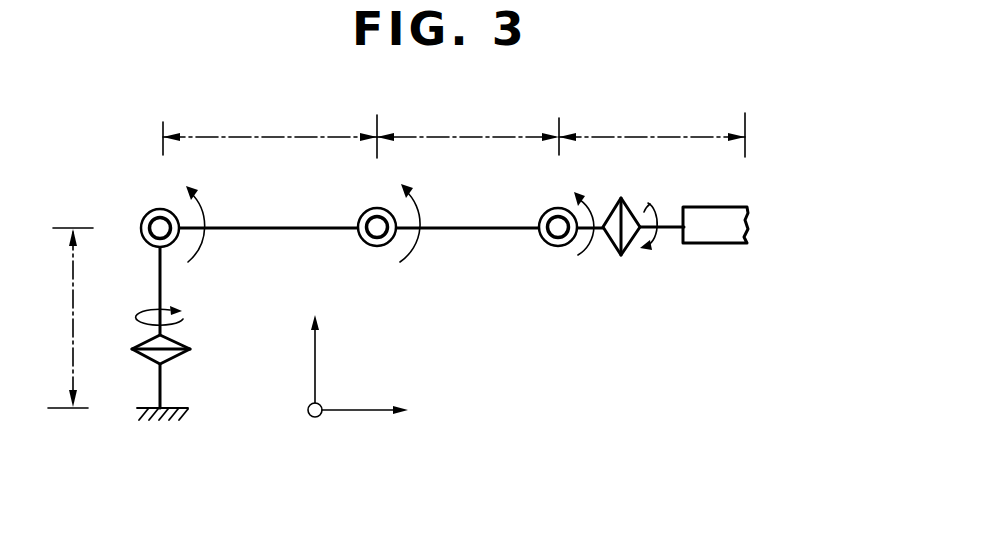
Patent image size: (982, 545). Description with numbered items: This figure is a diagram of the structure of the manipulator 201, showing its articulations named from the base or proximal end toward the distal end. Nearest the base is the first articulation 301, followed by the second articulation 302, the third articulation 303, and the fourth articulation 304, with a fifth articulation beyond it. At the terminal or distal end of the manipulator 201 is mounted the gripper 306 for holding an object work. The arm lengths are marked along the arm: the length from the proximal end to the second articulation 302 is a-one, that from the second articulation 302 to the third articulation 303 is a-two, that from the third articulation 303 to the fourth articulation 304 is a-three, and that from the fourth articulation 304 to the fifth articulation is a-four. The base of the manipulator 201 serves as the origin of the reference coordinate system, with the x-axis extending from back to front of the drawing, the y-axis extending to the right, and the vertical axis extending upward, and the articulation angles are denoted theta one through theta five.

The manipulator 201 is at (427, 235).
The first articulation 301 is at (188, 353).
The second articulation 302 is at (160, 208).
The third articulation 303 is at (375, 247).
The fourth articulation 304 is at (553, 247).
The gripper 306 is at (712, 244).